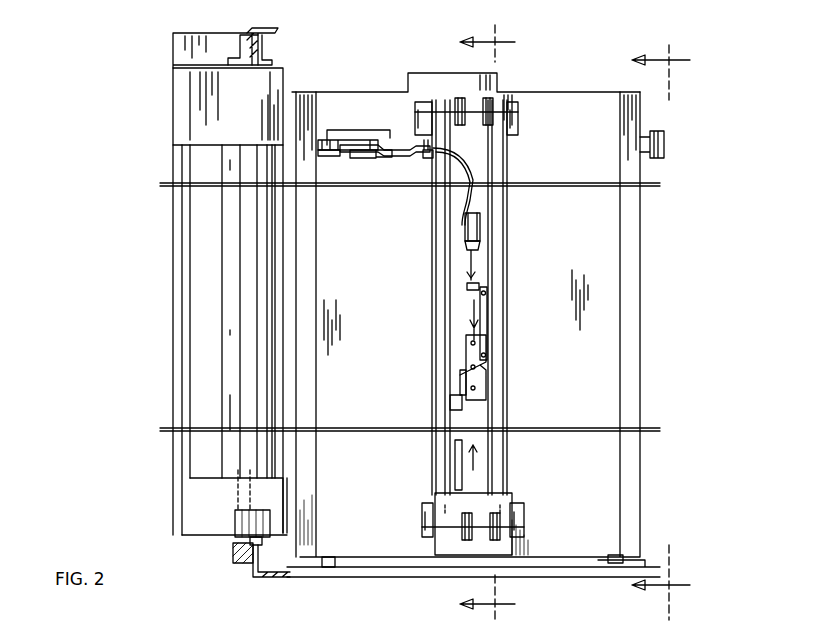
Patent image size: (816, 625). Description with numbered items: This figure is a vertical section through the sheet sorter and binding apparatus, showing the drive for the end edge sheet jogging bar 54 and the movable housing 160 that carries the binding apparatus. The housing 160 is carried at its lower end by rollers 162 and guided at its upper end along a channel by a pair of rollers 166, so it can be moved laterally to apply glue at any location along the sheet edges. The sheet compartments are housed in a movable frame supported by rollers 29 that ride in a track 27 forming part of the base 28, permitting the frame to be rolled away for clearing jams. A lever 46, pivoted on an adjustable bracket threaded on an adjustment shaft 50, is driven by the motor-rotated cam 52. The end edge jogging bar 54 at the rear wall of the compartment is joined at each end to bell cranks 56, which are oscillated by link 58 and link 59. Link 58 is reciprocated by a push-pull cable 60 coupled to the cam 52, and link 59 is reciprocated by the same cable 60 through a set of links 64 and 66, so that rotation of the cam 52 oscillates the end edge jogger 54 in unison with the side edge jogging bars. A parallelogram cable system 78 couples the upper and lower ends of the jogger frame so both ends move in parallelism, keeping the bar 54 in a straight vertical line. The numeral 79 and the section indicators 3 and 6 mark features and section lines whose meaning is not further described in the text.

The housing 160 is at (173, 329).
The rollers 166 is at (266, 50).
The rollers 162 is at (237, 522).
The base 28 is at (278, 584).
The track 27 is at (592, 562).
The rollers 29 is at (333, 567).
The end edge sheet jogging bar 54 is at (446, 316).
The parallelogram cable system 78 is at (495, 507).
The pulley housing 79 is at (440, 505).
The cam 52 is at (333, 160).
The lever 46 is at (358, 160).
The push-pull cable 60 is at (478, 146).
The link 58 is at (455, 257).
The link 64 is at (488, 327).
The link 66 is at (483, 374).
The link 59 is at (455, 408).
The bell cranks 56 is at (455, 452).
The adjustment shaft 50 is at (666, 140).
The section line 3- 3 is at (661, 328).
The section line 6- 6 is at (487, 322).